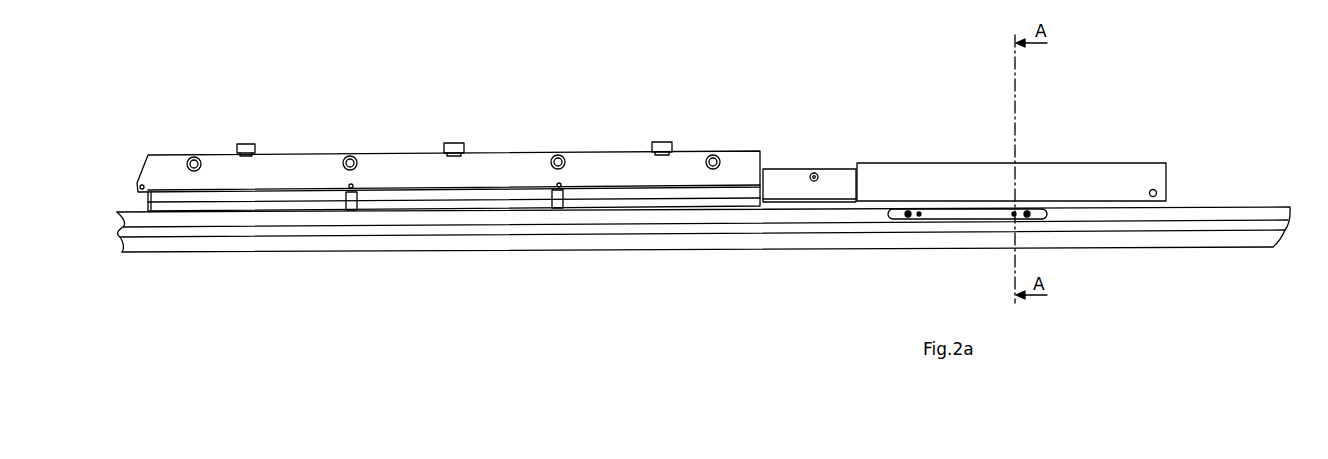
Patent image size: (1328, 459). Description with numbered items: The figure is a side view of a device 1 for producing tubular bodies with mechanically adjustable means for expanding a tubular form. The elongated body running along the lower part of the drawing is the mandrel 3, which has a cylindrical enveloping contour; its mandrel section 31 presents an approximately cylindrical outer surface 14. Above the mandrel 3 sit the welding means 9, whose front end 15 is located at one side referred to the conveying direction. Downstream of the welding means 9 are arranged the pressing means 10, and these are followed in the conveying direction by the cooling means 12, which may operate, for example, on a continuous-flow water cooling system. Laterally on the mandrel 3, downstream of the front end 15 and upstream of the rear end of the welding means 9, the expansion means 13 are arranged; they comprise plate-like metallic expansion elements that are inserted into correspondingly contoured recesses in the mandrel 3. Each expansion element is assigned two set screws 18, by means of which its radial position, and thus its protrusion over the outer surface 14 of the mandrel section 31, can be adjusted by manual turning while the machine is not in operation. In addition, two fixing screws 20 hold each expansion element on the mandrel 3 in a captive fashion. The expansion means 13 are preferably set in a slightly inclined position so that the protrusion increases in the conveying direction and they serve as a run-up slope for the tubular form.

The device 1 is at (667, 298).
The mandrel 3 is at (1208, 240).
The welding means 9 is at (1147, 182).
The pressing means 10 is at (841, 182).
The cooling means 12 is at (650, 198).
The expansion means 13 is at (930, 211).
The outer surface 14 is at (1205, 216).
The front end 15 is at (1166, 182).
The set screw 18 is at (918, 216).
The fixing screw 20 is at (906, 216).
The mandrel section 31 is at (1123, 238).